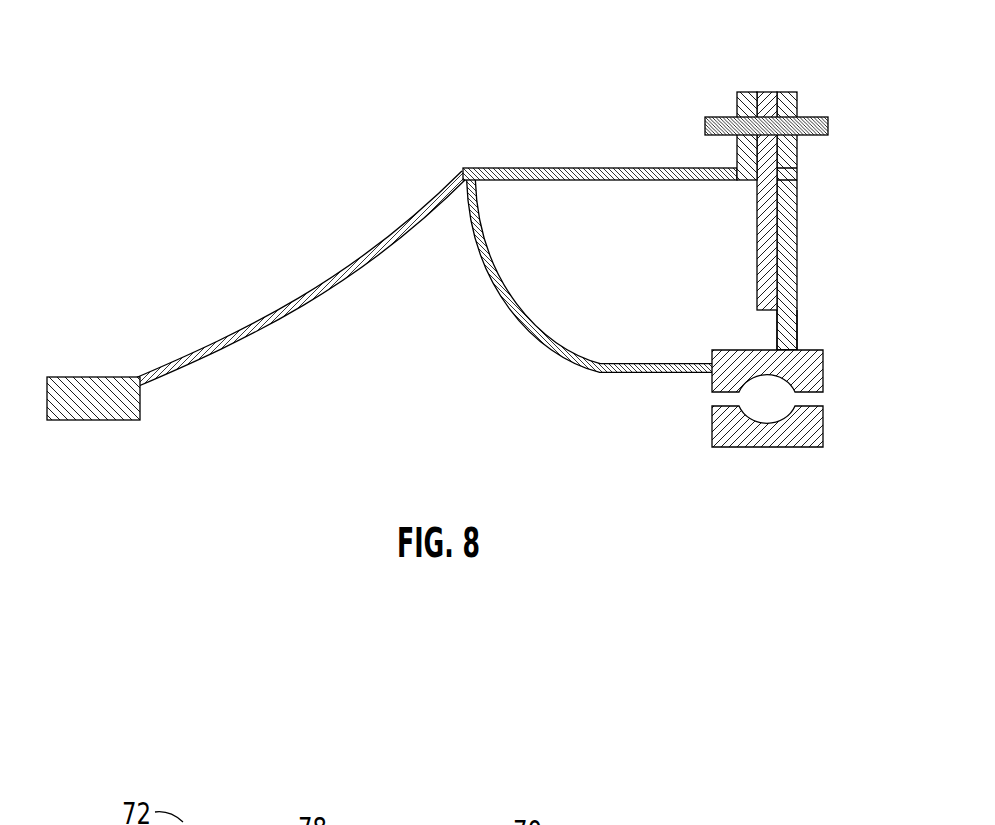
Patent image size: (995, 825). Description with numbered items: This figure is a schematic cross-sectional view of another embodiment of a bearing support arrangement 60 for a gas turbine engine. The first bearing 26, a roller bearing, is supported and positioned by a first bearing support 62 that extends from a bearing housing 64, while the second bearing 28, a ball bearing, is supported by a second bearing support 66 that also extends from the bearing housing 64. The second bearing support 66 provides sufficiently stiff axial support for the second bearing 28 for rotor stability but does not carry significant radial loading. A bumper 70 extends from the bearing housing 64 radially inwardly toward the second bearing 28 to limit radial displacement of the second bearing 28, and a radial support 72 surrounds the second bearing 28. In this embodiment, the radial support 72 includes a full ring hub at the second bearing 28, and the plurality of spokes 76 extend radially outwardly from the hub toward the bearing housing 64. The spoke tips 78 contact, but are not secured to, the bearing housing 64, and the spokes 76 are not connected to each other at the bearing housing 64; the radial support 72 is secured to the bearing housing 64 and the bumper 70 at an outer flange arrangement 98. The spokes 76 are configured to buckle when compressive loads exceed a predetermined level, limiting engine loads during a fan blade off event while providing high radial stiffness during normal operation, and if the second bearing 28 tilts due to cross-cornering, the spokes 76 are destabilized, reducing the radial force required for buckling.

The bearing support arrangement 60 is at (140, 61).
The first bearing 26 is at (83, 422).
The second bearing 28 is at (745, 447).
The first bearing support 62 is at (248, 335).
The bearing housing 64 is at (563, 168).
The second bearing support 66 is at (538, 343).
The bumper 70 is at (755, 198).
The radial support 72 is at (797, 247).
The radial spokes 76 is at (783, 340).
The spoke tip 78 is at (783, 197).
The outer flange arrangement 98 is at (809, 85).